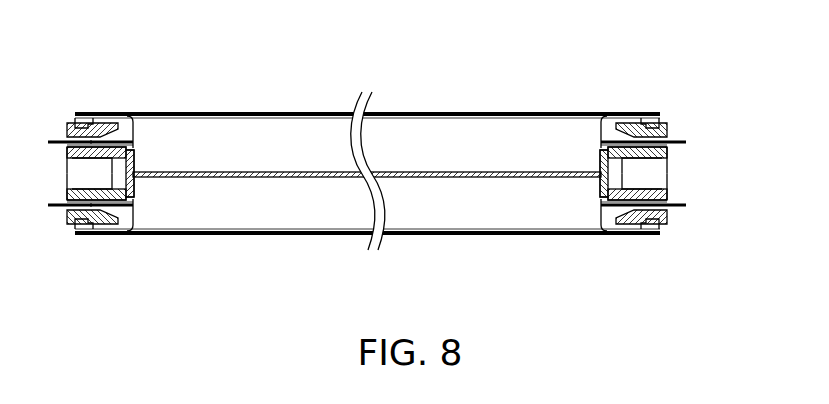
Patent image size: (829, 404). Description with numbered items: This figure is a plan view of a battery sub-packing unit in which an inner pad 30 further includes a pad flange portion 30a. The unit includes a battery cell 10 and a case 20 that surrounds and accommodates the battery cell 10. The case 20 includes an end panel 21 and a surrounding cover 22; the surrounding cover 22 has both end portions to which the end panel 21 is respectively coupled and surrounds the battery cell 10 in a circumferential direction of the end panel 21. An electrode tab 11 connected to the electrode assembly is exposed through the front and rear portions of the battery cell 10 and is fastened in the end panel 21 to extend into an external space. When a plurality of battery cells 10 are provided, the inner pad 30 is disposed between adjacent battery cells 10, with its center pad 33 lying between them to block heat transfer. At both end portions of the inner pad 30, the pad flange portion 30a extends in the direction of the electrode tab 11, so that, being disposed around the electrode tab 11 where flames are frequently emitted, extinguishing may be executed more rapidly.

The battery cell 10 is at (210, 222).
The electrode tab 11 is at (52, 206).
The case 20 is at (696, 192).
The end panel 21 is at (668, 195).
The surrounding cover 22 is at (750, 168).
The inner pad 30 is at (153, 62).
The pad flange portion 30a is at (132, 158).
The center pad 33 is at (213, 172).